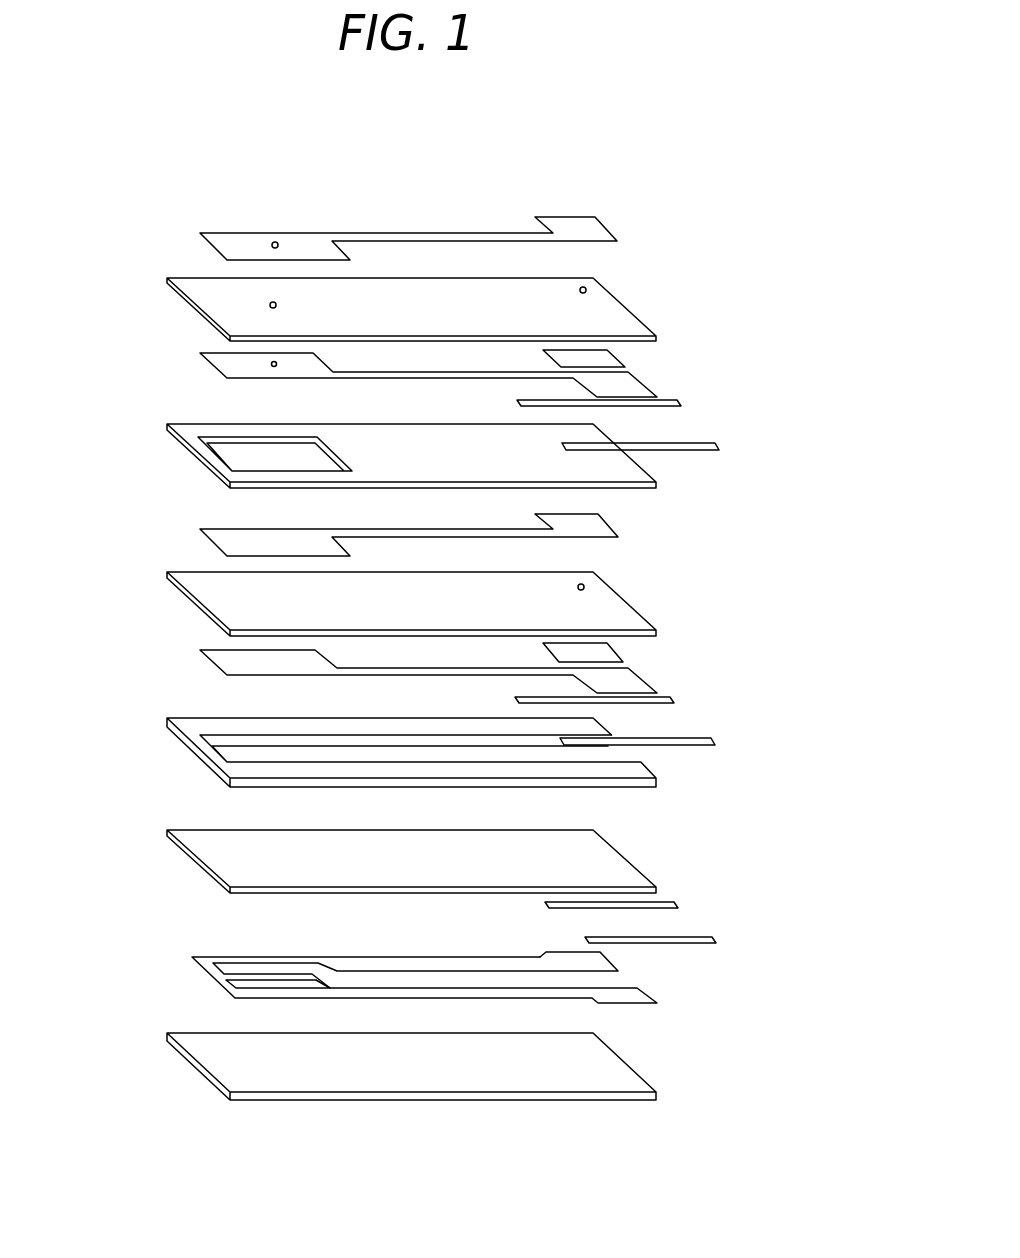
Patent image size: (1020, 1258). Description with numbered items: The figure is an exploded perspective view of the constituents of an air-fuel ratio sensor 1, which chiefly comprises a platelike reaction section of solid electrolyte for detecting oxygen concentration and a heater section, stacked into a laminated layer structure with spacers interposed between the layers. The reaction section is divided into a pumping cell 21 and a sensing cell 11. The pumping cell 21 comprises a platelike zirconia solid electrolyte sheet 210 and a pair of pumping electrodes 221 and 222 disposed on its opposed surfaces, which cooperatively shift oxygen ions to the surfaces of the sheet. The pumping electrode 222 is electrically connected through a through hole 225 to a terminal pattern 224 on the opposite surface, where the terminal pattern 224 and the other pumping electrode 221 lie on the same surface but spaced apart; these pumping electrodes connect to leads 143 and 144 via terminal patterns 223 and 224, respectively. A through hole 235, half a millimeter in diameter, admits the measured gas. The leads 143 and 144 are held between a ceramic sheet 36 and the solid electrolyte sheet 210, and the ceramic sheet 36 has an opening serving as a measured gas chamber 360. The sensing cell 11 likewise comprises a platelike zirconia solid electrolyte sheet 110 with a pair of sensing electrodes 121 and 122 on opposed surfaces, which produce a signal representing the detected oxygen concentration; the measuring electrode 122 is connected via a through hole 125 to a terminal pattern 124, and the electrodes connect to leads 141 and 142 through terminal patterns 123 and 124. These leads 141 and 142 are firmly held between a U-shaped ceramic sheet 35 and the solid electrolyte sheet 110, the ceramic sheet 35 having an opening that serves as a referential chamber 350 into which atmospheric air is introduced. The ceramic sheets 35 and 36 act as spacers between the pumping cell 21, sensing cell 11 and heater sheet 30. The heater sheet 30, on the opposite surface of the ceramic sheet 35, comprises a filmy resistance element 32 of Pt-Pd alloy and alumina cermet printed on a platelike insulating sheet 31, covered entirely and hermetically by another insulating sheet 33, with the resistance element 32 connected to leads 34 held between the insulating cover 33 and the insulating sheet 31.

The air-fuel ratio sensor 1 is at (416, 172).
The pumping cell 21 is at (152, 222).
The pumping electrode 222 is at (240, 248).
The through hole 235 is at (277, 305).
The through hole 225 is at (590, 282).
The solid electrolyte sheet 210 is at (628, 305).
The pumping electrode 221 is at (222, 364).
The terminal pattern 224 is at (600, 357).
The terminal pattern 223 is at (628, 386).
The lead 144 is at (680, 403).
The lead 143 is at (714, 447).
The ceramic sheet 36 is at (657, 487).
The measured gas chamber 360 is at (258, 460).
The sensing cell 11 is at (148, 492).
The sensing electrode 122 is at (233, 540).
The through hole 125 is at (587, 585).
The solid electrolyte sheet 110 is at (618, 605).
The sensing electrode 121 is at (235, 659).
The terminal pattern 124 is at (598, 655).
The terminal pattern 123 is at (630, 678).
The lead 142 is at (672, 700).
The lead 141 is at (687, 748).
The U-shaped ceramic sheet 35 is at (643, 783).
The referential chamber 350 is at (233, 755).
The heater sheet 30 is at (152, 1102).
The insulating sheet 33 is at (588, 860).
The leads 34 is at (675, 903).
The resistance element 32 is at (198, 970).
The insulating sheet 31 is at (600, 1065).